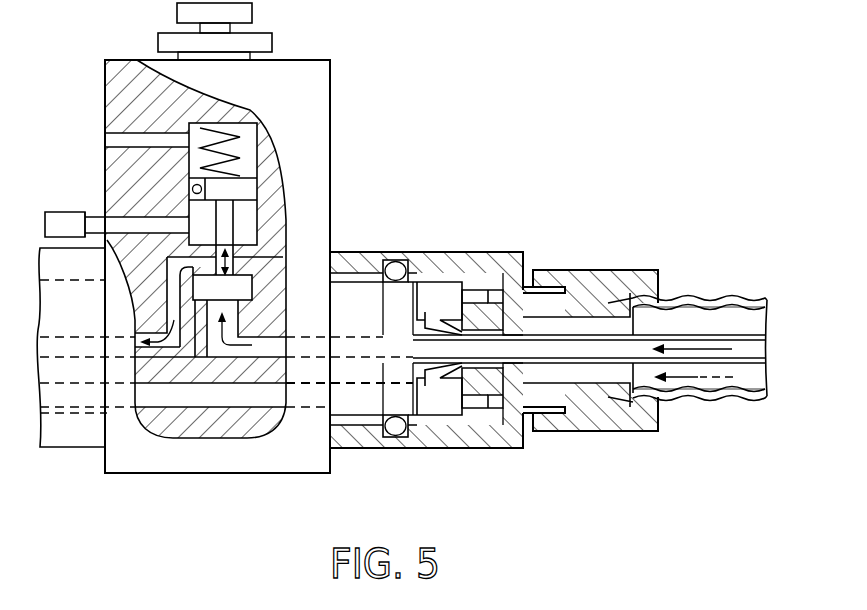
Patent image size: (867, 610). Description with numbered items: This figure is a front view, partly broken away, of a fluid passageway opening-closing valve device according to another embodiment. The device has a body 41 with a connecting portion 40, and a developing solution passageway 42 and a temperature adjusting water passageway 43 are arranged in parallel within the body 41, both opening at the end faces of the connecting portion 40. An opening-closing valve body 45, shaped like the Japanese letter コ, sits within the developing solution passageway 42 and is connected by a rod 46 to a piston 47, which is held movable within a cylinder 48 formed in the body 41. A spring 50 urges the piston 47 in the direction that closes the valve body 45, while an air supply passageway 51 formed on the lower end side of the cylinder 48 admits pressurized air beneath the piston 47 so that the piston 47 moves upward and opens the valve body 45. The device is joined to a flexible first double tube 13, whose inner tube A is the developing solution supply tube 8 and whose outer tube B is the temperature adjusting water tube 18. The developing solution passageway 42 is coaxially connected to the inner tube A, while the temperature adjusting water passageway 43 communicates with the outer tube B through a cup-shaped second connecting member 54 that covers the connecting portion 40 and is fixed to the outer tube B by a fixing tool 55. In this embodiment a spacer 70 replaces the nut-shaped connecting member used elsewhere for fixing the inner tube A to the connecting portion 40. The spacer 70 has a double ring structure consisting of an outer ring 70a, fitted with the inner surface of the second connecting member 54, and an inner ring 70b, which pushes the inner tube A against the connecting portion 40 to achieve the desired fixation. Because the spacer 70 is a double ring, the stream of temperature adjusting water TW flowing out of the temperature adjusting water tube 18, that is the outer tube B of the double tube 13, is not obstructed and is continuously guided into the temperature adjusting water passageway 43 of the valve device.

The body 41 is at (335, 93).
The spring 50 is at (196, 139).
The air supply passageway 51 is at (137, 223).
The cylinder 48 is at (258, 146).
The piston 47 is at (250, 192).
The rod 46 is at (225, 230).
The opening-closing valve body 45 is at (243, 289).
The developing solution passageway 42 is at (269, 348).
The temperature adjusting water passageway 43 is at (413, 337).
The second connecting member 54 is at (470, 437).
The connecting portion 40 is at (447, 304).
The spacer 70 is at (470, 298).
The inner ring 70b is at (497, 295).
The outer ring 70a is at (525, 262).
The fixing tool 55 is at (573, 422).
The first double tube 13 is at (720, 291).
The temperature adjusting water tube 18 is at (757, 322).
The developing solution supply tube 8 is at (757, 352).
The inner tube A is at (641, 386).
The temperature adjusting water TW is at (690, 378).
The outer tube B is at (742, 397).